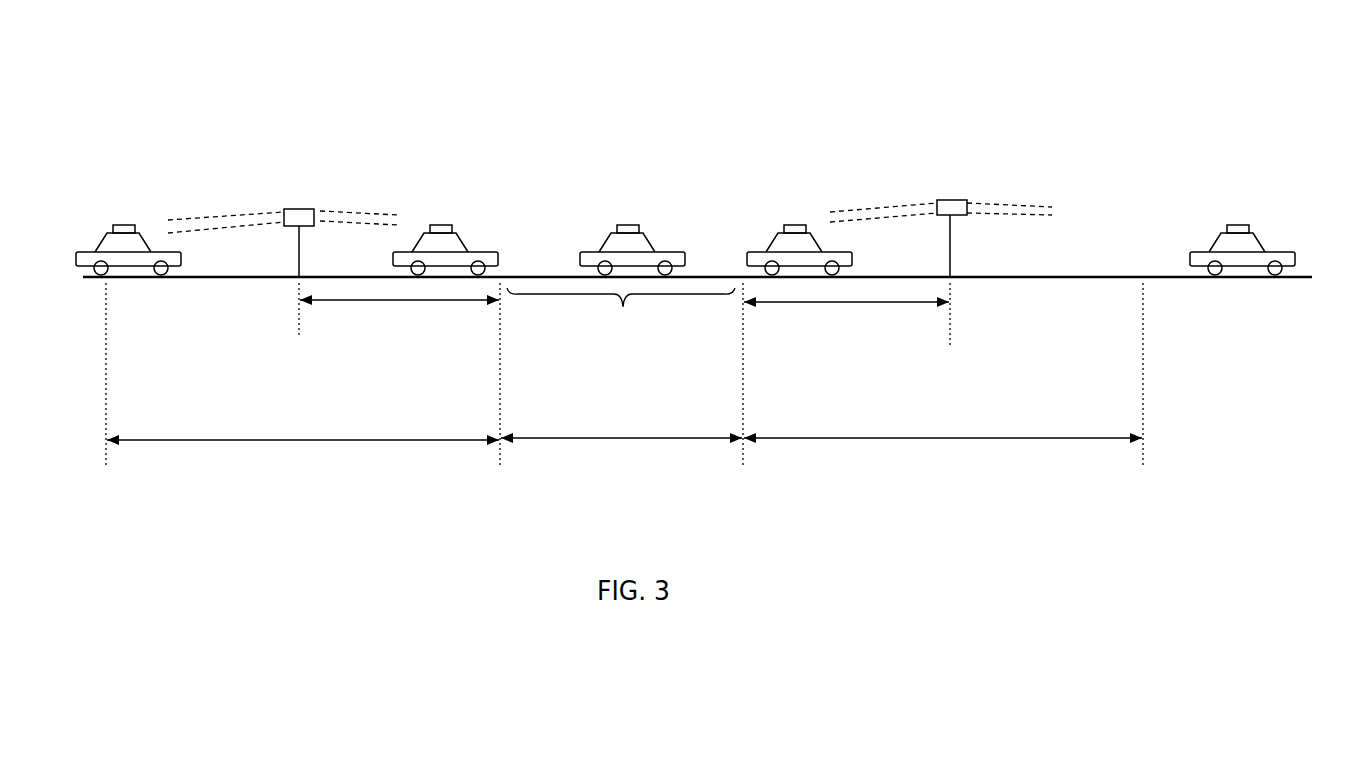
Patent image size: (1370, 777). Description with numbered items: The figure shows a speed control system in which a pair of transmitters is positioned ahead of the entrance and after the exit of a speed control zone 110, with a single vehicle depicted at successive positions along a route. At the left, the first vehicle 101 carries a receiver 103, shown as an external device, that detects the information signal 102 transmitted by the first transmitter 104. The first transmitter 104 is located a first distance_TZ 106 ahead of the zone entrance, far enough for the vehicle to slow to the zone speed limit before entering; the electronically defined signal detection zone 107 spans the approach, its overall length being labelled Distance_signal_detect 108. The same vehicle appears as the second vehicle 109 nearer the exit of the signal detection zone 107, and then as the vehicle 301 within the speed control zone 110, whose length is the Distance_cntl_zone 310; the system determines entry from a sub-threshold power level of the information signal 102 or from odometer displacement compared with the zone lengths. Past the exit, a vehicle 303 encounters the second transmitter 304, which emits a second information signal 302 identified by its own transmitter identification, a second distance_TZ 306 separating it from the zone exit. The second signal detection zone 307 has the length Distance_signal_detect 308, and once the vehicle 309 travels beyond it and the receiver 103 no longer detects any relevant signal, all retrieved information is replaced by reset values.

The first vehicle 101 is at (158, 248).
The information signal 102 is at (243, 208).
The receiver 103 is at (116, 220).
The first transmitter 104 is at (303, 196).
The first distance_TZ 106 is at (399, 323).
The signal detection zone 107 is at (303, 375).
The signal detection distance (Distance_signal_detect) 108 is at (303, 483).
The second vehicle 109 is at (472, 231).
The speed control zone 110 is at (621, 348).
The vehicle 301 is at (652, 233).
The information signal 302 is at (903, 196).
The vehicle 303 is at (818, 233).
The second transmitter 304 is at (951, 196).
The transmission zone distance (Distance_TZ) 306 is at (847, 322).
The second signal detection zone 307 is at (1014, 375).
The Distance_signal_detect 308 is at (943, 481).
The vehicle 309 is at (1263, 231).
The Distance_cntl_zone 310 is at (622, 404).